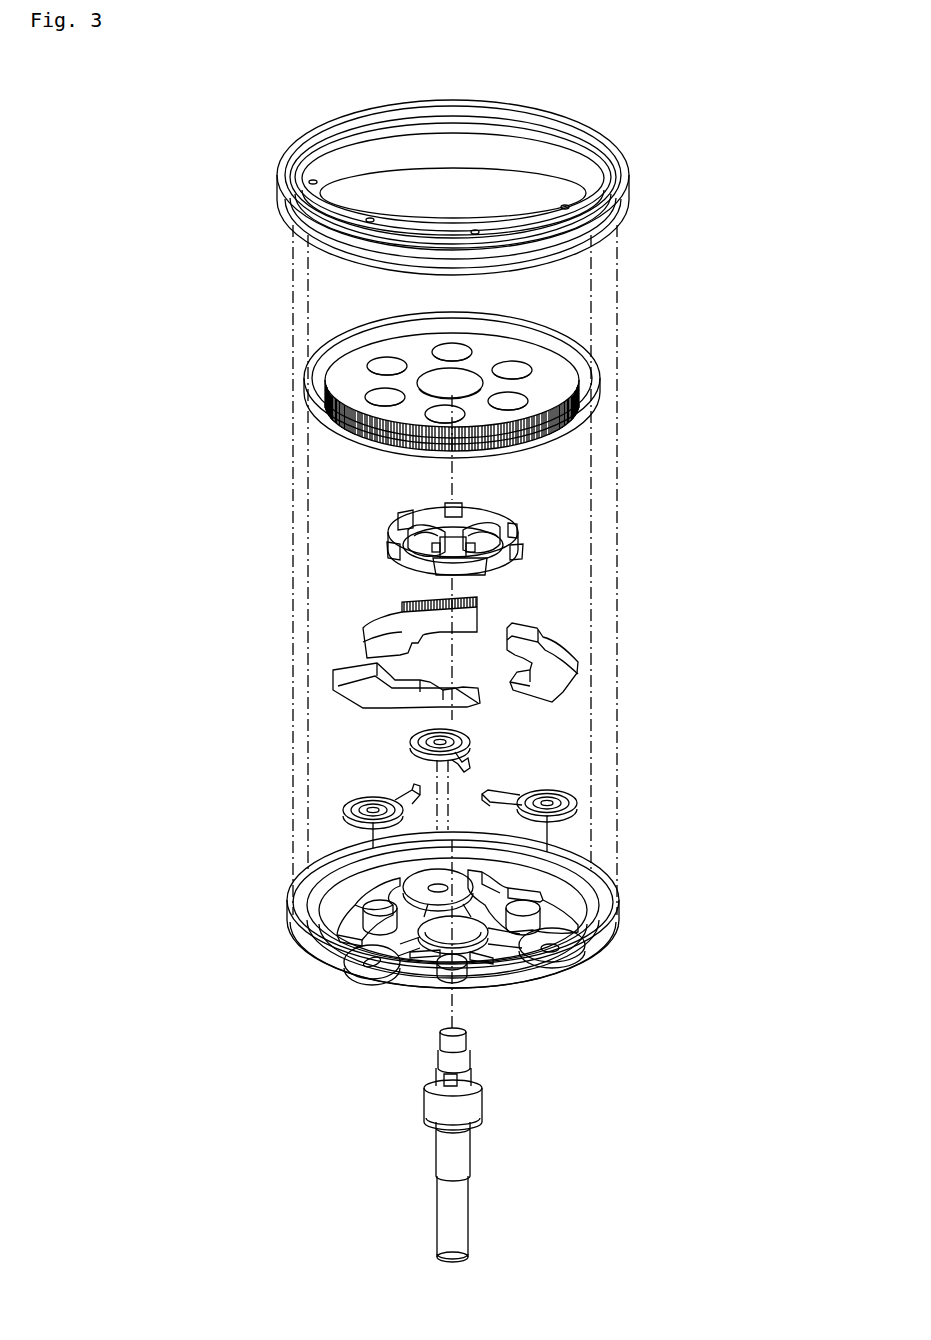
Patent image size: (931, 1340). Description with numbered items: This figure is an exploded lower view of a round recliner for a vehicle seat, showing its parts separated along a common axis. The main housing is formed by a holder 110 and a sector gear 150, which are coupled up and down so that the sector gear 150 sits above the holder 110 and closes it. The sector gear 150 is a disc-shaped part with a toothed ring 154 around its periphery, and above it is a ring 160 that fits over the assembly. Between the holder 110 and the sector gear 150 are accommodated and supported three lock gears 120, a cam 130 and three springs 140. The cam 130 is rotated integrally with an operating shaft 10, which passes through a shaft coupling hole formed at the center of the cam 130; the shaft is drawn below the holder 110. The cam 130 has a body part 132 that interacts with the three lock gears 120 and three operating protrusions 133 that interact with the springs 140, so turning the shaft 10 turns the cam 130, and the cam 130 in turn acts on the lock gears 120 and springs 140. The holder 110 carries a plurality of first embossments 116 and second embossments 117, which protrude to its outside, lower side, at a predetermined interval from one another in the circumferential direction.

The operating shaft 10 is at (396, 1159).
The holder 110 is at (369, 958).
The first embossment 116 is at (358, 962).
The second embossment 117 is at (345, 946).
The lock gear 120 is at (308, 666).
The cam 130 is at (436, 521).
The body part 132 is at (500, 505).
The operating protrusion 133 is at (512, 530).
The spring 140 is at (318, 787).
The sector gear 150 is at (346, 409).
The gear teeth 154 is at (345, 452).
The cover ring 160 is at (252, 163).